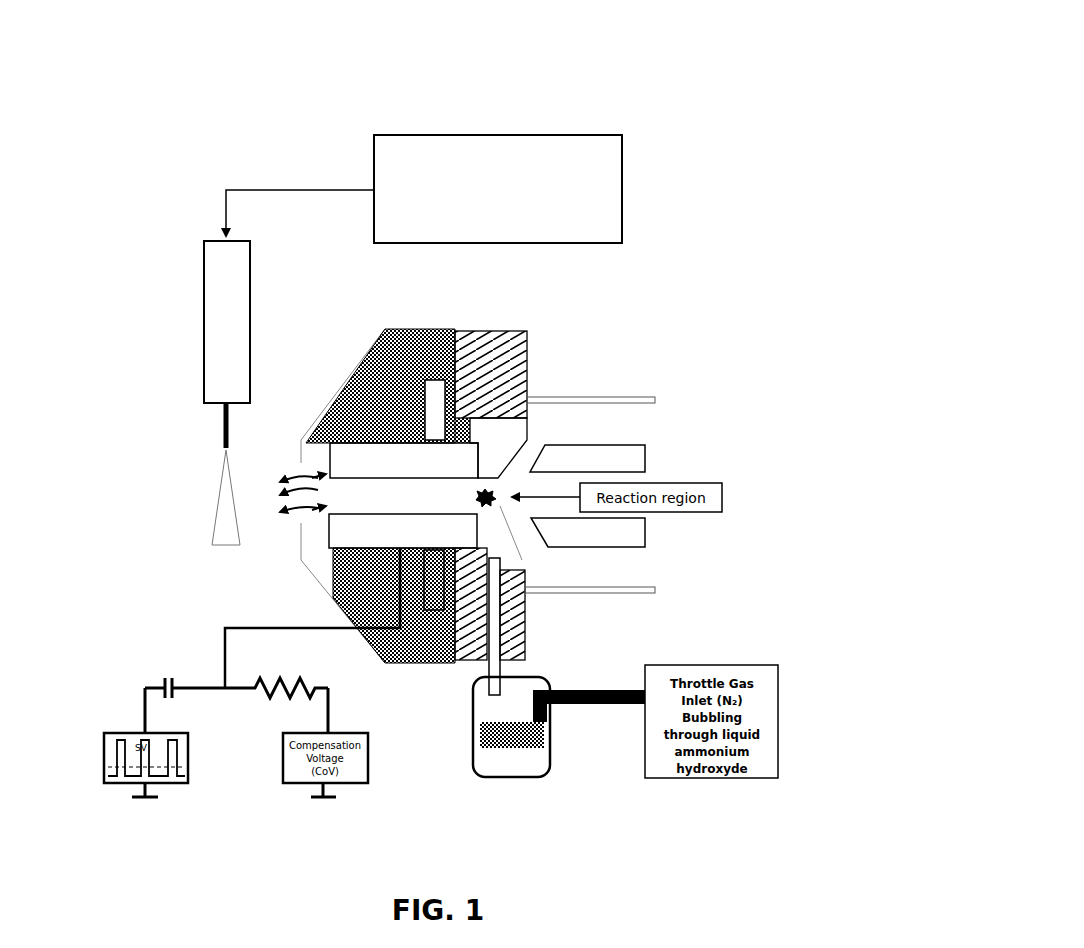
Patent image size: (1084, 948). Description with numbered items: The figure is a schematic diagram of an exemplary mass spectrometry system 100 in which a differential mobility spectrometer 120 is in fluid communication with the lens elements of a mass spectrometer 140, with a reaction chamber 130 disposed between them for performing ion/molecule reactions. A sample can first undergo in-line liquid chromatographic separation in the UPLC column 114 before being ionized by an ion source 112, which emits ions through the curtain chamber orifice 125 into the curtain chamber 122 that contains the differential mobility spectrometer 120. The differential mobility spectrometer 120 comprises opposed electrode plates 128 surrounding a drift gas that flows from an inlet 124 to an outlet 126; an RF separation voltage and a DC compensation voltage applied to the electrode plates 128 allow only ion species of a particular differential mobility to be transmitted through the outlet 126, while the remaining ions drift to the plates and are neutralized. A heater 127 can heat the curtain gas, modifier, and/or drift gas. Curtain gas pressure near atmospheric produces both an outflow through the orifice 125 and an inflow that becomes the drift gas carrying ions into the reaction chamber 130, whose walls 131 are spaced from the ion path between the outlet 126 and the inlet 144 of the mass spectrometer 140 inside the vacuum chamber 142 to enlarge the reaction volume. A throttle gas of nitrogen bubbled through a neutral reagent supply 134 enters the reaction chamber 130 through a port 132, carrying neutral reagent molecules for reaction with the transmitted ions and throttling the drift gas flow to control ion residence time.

The mass spectrometry system 100 is at (765, 82).
The ion source 112 is at (204, 272).
The UPLC column 114 is at (430, 133).
The differential mobility spectrometer 120 is at (357, 430).
The curtain chamber 122 is at (328, 559).
The inlet of the differential mobility spectrometer 124 is at (328, 484).
The curtain chamber orifice 125 is at (302, 476).
The outlet of the differential mobility spectrometer 126 is at (477, 488).
The heater 127 is at (436, 382).
The electrode plates 128 is at (356, 540).
The reaction chamber 130 is at (505, 440).
The walls of the reaction chamber 131 is at (505, 432).
The port 132 is at (488, 572).
The neutral reagent supply 134 is at (548, 772).
The mass spectrometer 140 is at (628, 452).
The vacuum chamber 142 is at (658, 586).
The inlet of the mass spectrometer 144 is at (503, 505).